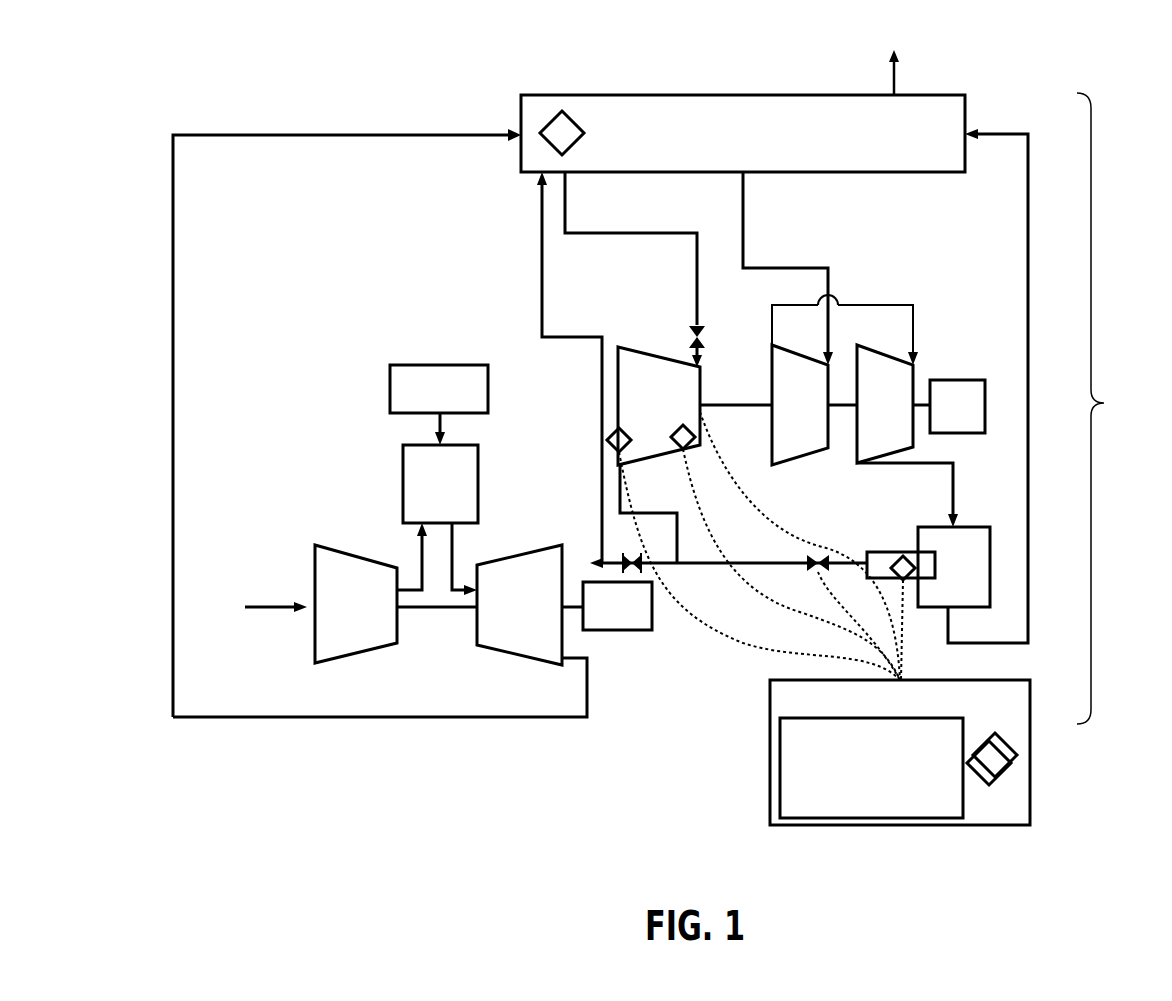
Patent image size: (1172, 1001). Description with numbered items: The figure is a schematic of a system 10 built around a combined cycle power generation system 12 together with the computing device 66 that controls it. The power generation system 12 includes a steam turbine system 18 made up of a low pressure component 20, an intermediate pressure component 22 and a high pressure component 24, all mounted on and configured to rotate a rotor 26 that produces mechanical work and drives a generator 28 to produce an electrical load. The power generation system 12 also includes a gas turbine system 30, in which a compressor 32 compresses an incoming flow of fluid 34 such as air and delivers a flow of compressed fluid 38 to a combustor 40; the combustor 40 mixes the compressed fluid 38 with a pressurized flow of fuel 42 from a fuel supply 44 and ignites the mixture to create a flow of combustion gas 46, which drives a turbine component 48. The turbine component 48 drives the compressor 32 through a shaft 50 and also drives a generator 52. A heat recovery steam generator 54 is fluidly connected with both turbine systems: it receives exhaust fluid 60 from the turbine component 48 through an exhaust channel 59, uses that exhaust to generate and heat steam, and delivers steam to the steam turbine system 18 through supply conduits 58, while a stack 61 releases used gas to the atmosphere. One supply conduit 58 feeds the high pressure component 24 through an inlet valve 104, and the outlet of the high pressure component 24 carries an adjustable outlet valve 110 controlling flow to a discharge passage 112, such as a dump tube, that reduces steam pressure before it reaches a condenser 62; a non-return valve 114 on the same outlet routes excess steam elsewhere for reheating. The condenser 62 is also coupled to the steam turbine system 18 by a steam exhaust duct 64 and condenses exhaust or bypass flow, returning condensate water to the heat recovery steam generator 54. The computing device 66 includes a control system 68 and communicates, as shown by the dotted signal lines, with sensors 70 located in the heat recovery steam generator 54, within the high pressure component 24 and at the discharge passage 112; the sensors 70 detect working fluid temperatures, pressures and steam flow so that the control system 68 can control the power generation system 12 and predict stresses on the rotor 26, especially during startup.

The system 10 is at (360, 82).
The combined cycle power generation system 12 is at (1110, 408).
The steam turbine system 18 is at (592, 420).
The low pressure component 20 is at (896, 415).
The intermediate pressure component 22 is at (811, 415).
The high pressure component 24 is at (671, 415).
The rotor 26 is at (730, 412).
The generator 28 is at (969, 415).
The gas turbine system 30 is at (676, 602).
The compressor 32 is at (367, 616).
The flow of fluid 34 is at (264, 603).
The flow of compressed fluid 38 is at (412, 608).
The combustor 40 is at (451, 494).
The pressurized flow of fuel 42 is at (448, 437).
The fuel supply 44 is at (450, 399).
The flow of combustion gas 46 is at (462, 610).
The turbine component 48 is at (530, 616).
The shaft 50 is at (432, 610).
The generator 52 is at (612, 632).
The heat recovery steam generator 54 is at (811, 145).
The supply conduits 58 is at (743, 246).
The exhaust channel 59 is at (380, 423).
The exhaust fluid 60 is at (174, 426).
The stack 61 is at (890, 78).
The condenser 62 is at (990, 582).
The steam exhaust duct 64 is at (950, 478).
The computing device 66 is at (1011, 714).
The control system 68 is at (959, 755).
The sensors 70 is at (571, 122).
The inlet valve 104 is at (703, 345).
The outlet valve 110 is at (824, 556).
The discharge passage 112 is at (888, 552).
The non-return valve 114 is at (634, 556).